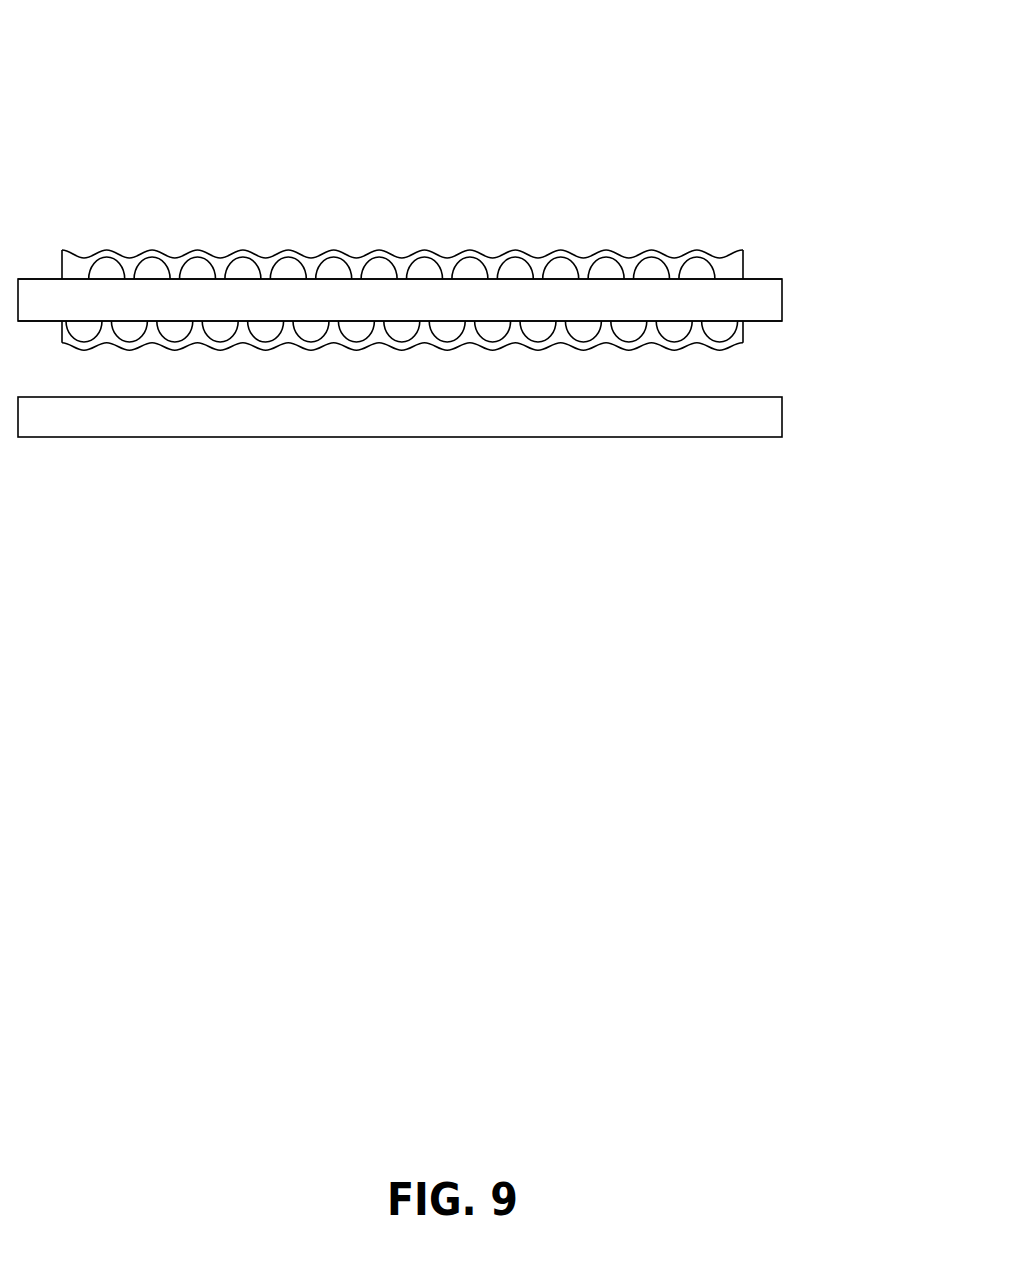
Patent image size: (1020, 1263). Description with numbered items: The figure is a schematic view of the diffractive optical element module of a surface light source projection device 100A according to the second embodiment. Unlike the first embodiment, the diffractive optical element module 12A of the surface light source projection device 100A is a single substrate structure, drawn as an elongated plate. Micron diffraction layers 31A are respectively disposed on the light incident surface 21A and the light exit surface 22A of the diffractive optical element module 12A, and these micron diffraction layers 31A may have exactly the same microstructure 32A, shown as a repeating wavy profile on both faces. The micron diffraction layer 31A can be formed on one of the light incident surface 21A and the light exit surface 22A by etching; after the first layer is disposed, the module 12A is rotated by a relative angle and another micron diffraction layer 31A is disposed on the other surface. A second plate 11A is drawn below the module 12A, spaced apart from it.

The surface light source projection device 100A is at (118, 29).
The first substrate 11A is at (782, 417).
The diffractive optical element module 12A is at (782, 293).
The light incident surface 21A is at (764, 322).
The light exit surface 22A is at (765, 278).
The micron diffraction layer 31A is at (647, 252).
The microstructure 32A is at (520, 252).